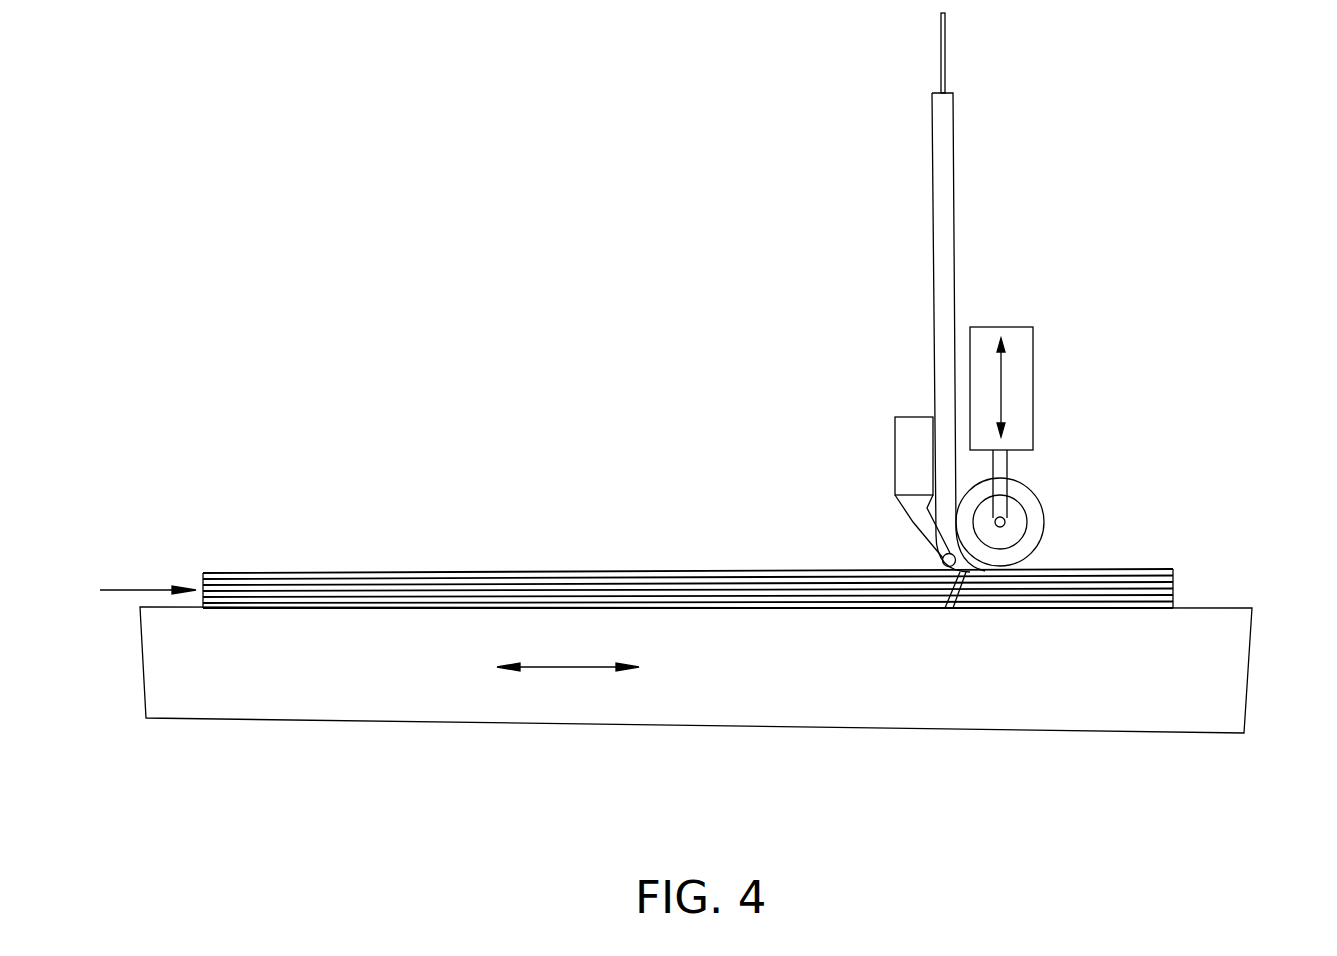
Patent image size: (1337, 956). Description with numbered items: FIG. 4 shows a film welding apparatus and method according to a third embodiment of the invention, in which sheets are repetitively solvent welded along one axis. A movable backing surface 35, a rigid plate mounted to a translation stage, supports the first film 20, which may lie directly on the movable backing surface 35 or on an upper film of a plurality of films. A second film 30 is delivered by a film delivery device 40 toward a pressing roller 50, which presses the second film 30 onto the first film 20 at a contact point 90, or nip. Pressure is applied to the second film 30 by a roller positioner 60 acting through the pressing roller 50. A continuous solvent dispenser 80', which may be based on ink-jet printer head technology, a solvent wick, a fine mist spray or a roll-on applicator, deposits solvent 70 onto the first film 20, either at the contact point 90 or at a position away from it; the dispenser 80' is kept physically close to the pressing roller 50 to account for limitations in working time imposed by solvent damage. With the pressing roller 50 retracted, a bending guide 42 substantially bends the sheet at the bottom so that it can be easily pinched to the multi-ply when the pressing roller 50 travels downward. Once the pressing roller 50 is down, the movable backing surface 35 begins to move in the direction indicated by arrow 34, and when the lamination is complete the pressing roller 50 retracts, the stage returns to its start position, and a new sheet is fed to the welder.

The first film 20 is at (203, 575).
The second film 30 is at (945, 52).
The direction of stack movement 34 is at (127, 593).
The movable backing surface 35 is at (1248, 672).
The film delivery device 40 is at (955, 220).
The bending guide 42 is at (962, 568).
The pressing roller 50 is at (1043, 498).
The roller positioner 60 is at (1033, 360).
The solvent 70 is at (918, 452).
The continuous solvent dispenser 80' is at (867, 504).
The contact point 90 is at (965, 570).